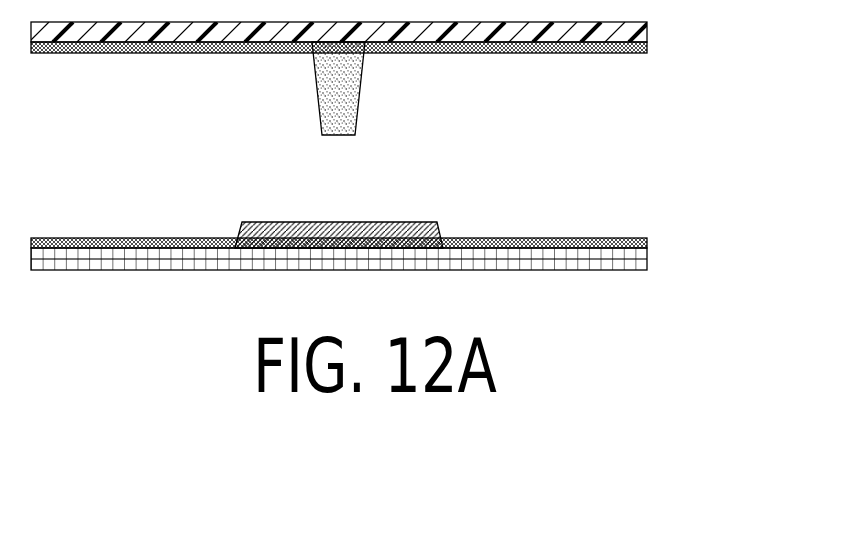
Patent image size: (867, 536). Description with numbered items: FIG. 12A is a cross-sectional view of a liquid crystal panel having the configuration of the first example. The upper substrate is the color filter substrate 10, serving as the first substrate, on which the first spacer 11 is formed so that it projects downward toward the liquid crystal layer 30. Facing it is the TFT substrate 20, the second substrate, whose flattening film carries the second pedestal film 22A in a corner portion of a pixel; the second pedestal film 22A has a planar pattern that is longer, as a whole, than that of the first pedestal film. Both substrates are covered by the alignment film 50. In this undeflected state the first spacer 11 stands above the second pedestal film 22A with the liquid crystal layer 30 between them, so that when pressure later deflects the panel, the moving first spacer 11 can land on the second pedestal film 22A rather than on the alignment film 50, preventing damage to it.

The color filter substrate 10 is at (648, 33).
The alignment film 50 is at (648, 47).
The first spacer 11 is at (333, 99).
The liquid crystal layer 30 is at (615, 147).
The TFT substrate 20 is at (645, 258).
The second pedestal film 22A is at (440, 228).